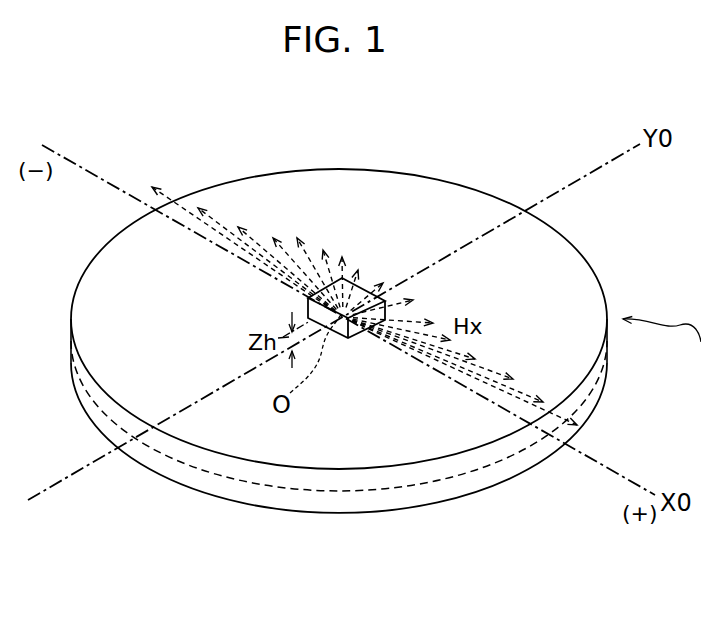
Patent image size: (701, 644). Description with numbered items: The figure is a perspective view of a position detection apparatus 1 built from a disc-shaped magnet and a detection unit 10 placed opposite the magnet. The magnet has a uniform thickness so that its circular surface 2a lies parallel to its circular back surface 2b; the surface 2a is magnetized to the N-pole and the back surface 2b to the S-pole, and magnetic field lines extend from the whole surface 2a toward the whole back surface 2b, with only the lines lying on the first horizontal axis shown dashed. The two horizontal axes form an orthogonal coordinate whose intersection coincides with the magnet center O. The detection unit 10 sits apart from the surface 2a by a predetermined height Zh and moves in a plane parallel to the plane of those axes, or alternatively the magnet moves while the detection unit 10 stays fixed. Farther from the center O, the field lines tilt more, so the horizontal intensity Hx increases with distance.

The position detection apparatus 1 is at (386, 330).
The surface 2a is at (570, 265).
The back surface 2b is at (489, 485).
The detection unit 10 is at (342, 342).